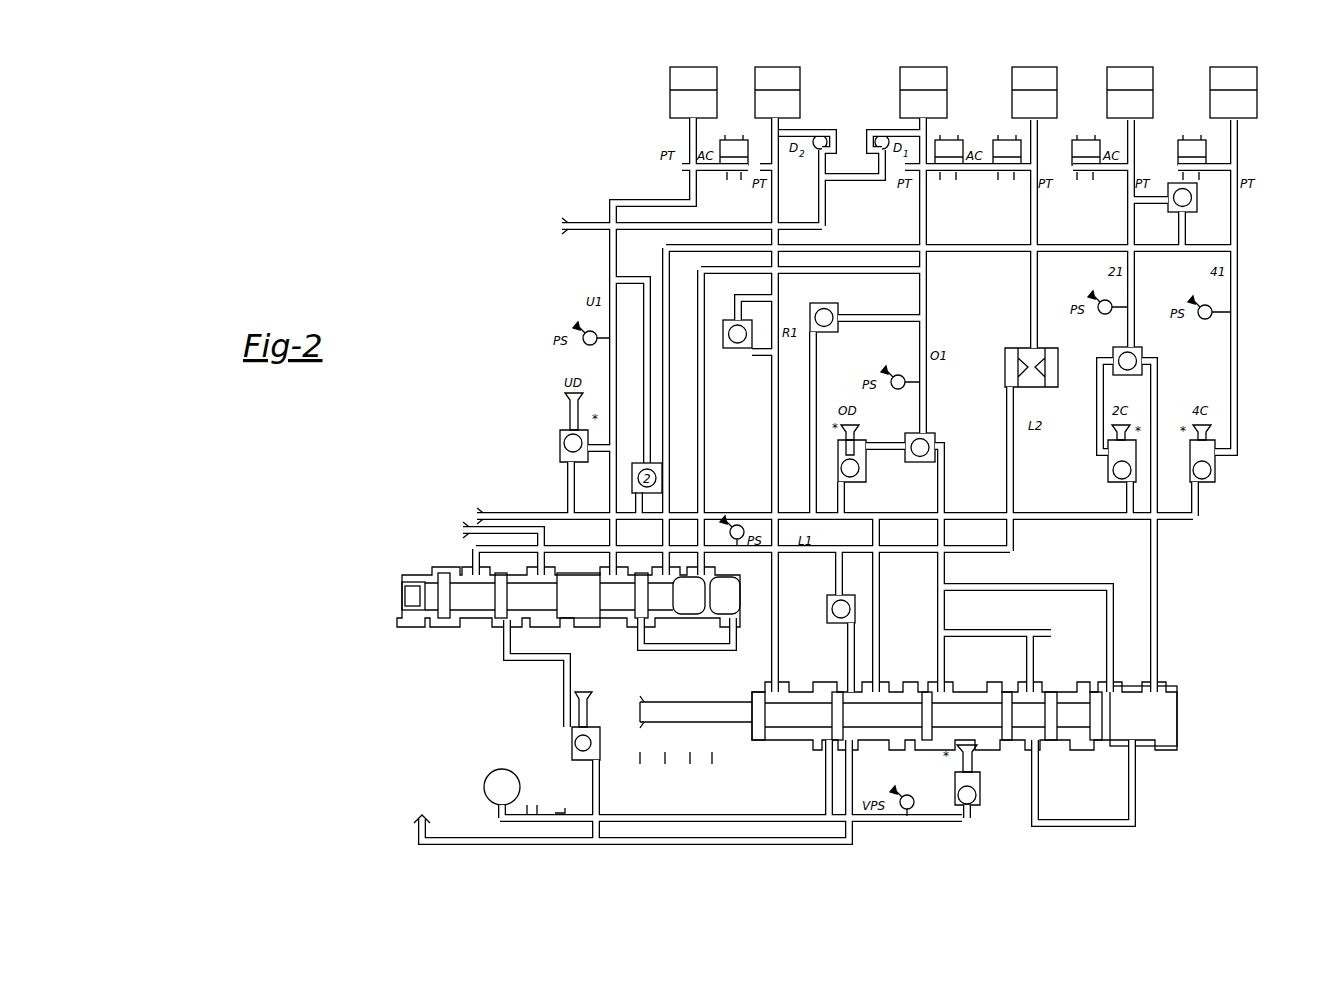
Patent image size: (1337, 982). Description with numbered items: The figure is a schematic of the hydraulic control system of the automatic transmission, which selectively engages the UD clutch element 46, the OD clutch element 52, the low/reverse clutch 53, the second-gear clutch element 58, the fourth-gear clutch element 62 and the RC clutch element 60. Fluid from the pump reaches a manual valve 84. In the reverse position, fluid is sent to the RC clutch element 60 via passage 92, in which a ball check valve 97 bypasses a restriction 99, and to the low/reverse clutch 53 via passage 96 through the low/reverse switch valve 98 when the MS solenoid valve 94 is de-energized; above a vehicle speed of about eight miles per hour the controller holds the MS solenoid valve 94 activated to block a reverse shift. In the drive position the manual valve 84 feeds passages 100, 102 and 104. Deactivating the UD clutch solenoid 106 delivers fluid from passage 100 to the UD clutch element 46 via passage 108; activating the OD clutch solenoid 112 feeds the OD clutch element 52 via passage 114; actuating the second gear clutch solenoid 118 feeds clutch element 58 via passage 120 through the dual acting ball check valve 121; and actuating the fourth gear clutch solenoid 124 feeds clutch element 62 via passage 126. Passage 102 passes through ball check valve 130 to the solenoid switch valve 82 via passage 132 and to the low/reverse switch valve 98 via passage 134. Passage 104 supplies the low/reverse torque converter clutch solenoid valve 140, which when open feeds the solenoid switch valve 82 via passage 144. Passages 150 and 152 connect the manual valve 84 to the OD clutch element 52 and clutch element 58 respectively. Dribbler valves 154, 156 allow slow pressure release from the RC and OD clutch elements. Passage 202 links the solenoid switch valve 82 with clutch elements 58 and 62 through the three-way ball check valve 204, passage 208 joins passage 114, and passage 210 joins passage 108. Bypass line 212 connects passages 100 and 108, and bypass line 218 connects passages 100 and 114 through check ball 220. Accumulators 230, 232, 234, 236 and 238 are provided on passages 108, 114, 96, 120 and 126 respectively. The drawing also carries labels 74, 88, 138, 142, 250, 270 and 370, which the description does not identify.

The UD clutch element 46 is at (670, 82).
The RC clutch element 60 is at (800, 80).
The OD clutch element 52 is at (947, 80).
The low/reverse clutch 53 is at (1057, 80).
The 2C clutch element 58 is at (1153, 80).
The 4C clutch element 62 is at (1257, 80).
The accumulator 230 is at (733, 150).
The accumulator 232 is at (950, 150).
The accumulator 234 is at (1000, 165).
The accumulator 236 is at (1085, 150).
The accumulator 238 is at (1190, 150).
The dribbler valve 154 is at (822, 135).
The dribbler valve 156 is at (884, 135).
The passage 108 is at (637, 203).
The bypass line 212 is at (635, 275).
The passage 202 is at (835, 247).
The passage 114 is at (928, 218).
The passage 208 is at (704, 456).
The passage 210 is at (617, 460).
The bypass line 218 is at (808, 482).
The check ball 220 is at (845, 314).
The ball check valve 97 is at (740, 350).
The restriction 99 is at (777, 342).
The passage 92 is at (779, 562).
The passage 96 is at (1030, 282).
The low/reverse switch valve 98 is at (1055, 350).
The passage 120 is at (1127, 233).
The three-way ball check valve 204 is at (1197, 195).
The passage 126 is at (1238, 233).
The dual acting ball check valve 121 is at (1143, 352).
The passage 152 is at (1158, 598).
The passage 150 is at (1083, 587).
The passage 100 is at (945, 580).
The passage 134 is at (1005, 487).
The switch valve 6 270 is at (928, 434).
The overdrive clutch solenoid 112 is at (850, 400).
The second gear clutch solenoid 118 is at (1108, 470).
The fourth gear clutch solenoid 124 is at (1217, 482).
The underdrive clutch solenoid 106 is at (558, 452).
The passage 132 is at (470, 547).
The ball check valve 130 is at (827, 615).
The passage 102 is at (858, 630).
The solenoid switch valve 82 is at (589, 600).
The passage 144 is at (500, 650).
The low/reverse torque converter clutch solenoid valve 140 is at (572, 740).
The passage 142 is at (601, 800).
The pump 74 is at (485, 780).
The pump outlet passage 88 is at (517, 823).
The passage 370 is at (668, 840).
The passage 104 is at (728, 845).
The sump return passage 138 is at (475, 845).
The multi-select solenoid valve 94 is at (955, 808).
The passage 250 is at (1135, 790).
The manual valve 84 is at (985, 703).